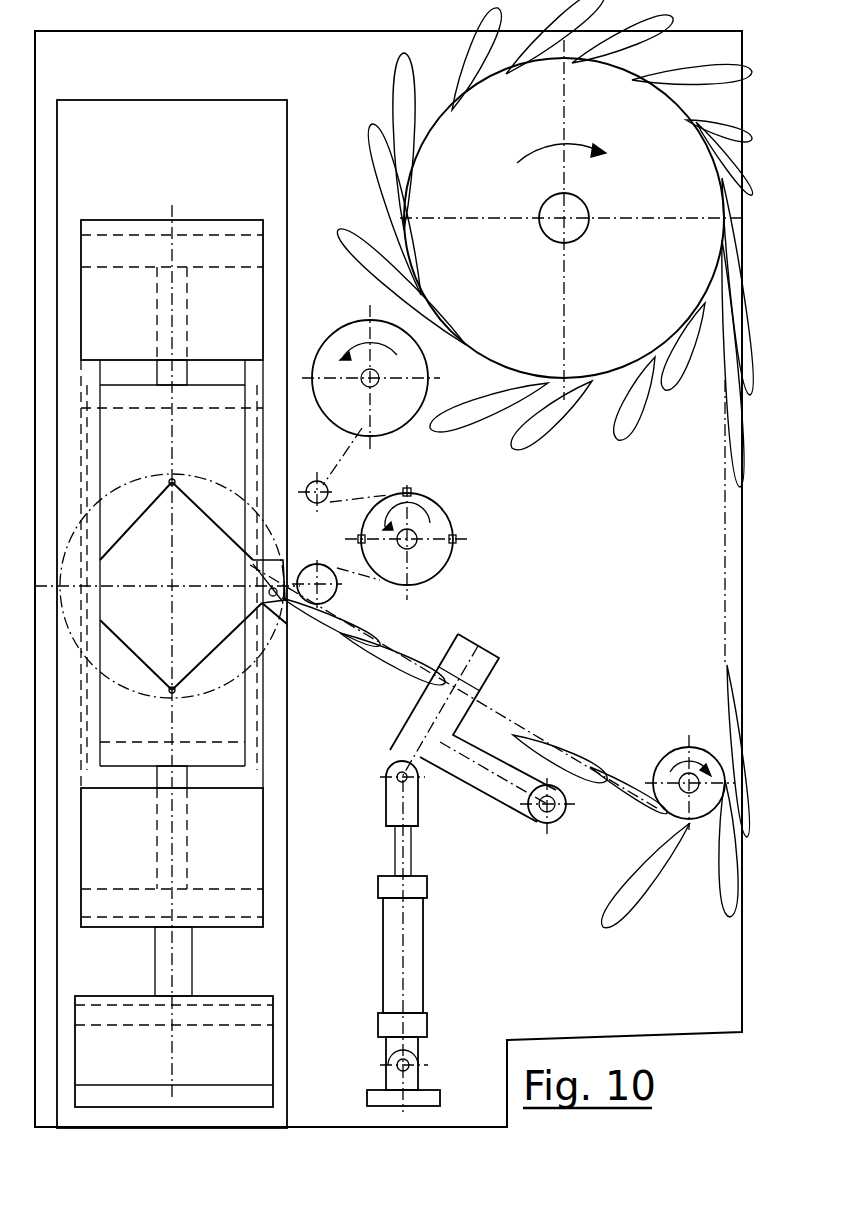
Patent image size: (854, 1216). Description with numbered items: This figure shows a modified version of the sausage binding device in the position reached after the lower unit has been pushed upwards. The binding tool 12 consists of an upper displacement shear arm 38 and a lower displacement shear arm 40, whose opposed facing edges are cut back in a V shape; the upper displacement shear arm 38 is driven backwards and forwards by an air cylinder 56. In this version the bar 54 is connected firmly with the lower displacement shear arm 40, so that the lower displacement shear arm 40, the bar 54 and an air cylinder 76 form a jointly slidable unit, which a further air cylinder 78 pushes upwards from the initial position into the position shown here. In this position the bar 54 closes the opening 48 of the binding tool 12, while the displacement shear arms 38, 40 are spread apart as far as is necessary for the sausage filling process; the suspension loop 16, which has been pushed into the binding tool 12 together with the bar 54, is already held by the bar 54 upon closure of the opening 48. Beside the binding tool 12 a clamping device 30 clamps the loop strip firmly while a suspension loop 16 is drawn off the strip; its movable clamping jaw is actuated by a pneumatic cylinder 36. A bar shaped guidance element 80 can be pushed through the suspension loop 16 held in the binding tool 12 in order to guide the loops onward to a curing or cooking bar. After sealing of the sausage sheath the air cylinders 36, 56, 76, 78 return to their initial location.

The binding tool 12 is at (291, 708).
The suspension loop 16 is at (232, 563).
The clamping device 30 is at (462, 778).
The pneumatic cylinder 36 is at (415, 953).
The upper displacement shear arm 38 is at (128, 510).
The lower displacement shear arm 40 is at (123, 660).
The opening 48 is at (313, 567).
The bar 54 is at (243, 600).
The air cylinder 56 is at (236, 321).
The air cylinder 76 is at (236, 851).
The air cylinder 78 is at (240, 1069).
The bar shaped guidance element 80 is at (293, 600).